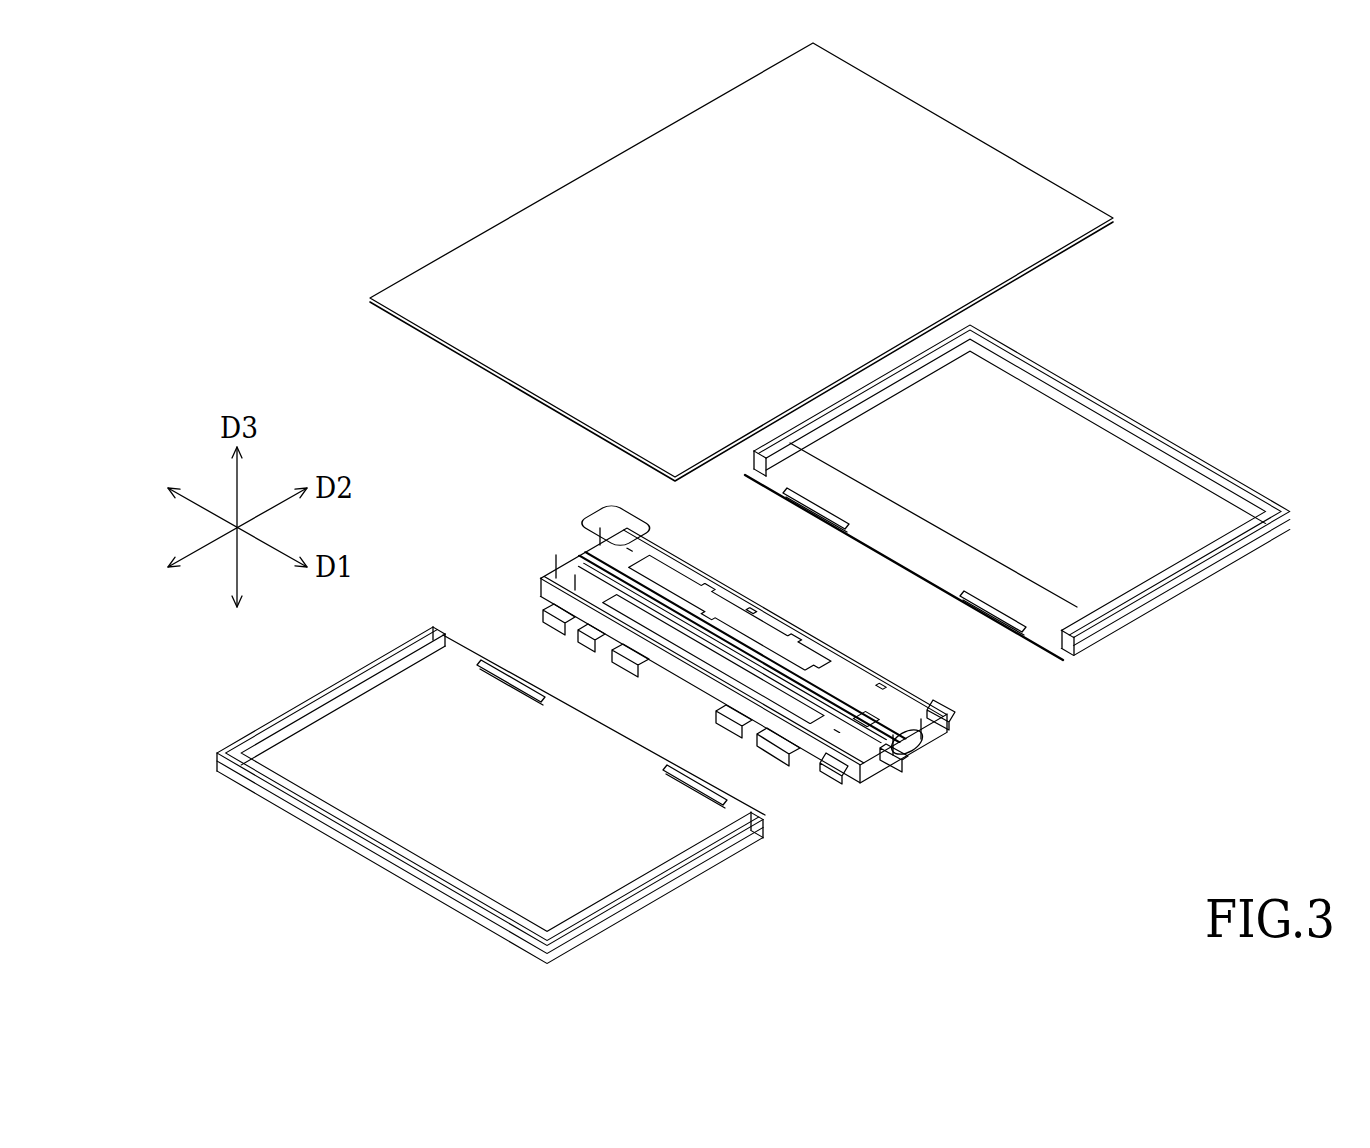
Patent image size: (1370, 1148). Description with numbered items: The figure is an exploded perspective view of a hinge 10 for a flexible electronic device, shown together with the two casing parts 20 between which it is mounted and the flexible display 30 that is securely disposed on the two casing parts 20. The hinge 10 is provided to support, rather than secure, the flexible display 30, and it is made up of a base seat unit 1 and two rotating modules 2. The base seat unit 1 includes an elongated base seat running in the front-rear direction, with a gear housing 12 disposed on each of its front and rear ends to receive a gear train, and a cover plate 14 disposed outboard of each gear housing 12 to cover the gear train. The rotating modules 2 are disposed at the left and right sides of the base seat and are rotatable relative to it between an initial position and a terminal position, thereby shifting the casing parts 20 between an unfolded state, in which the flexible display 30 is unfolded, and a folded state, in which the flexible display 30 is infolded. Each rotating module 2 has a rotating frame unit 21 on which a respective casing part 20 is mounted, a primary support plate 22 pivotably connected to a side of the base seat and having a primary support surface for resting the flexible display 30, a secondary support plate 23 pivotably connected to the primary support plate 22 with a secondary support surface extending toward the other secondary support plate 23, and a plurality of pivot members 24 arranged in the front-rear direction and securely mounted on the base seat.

The base seat unit 1 is at (813, 681).
The rotating module 2 is at (805, 622).
The hinge 10 is at (813, 681).
The gear housing 12 is at (892, 755).
The cover plate 14 is at (913, 750).
The casing part 20 is at (1203, 583).
The rotating frame unit 21 is at (952, 712).
The primary support plate 22 is at (753, 617).
The secondary support plate 23 is at (723, 625).
The pivot member 24 is at (865, 727).
The flexible display 30 is at (535, 203).